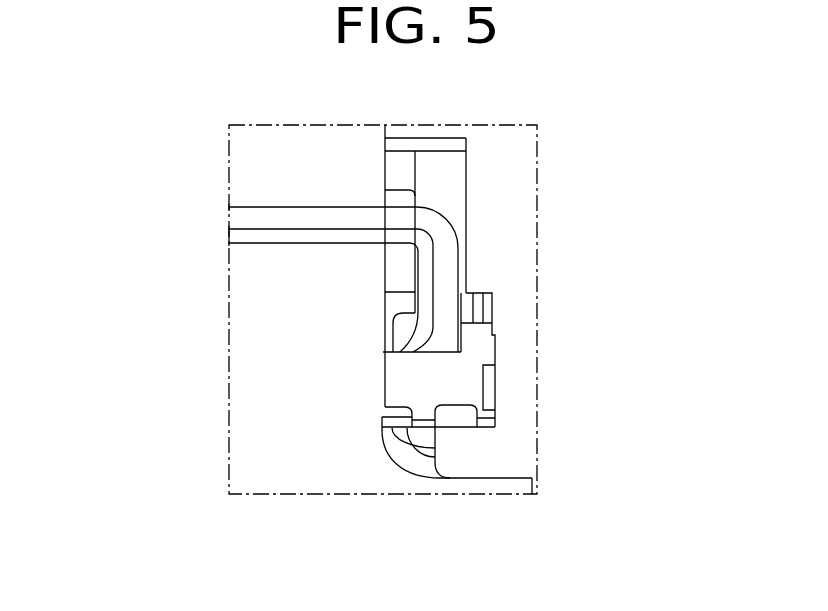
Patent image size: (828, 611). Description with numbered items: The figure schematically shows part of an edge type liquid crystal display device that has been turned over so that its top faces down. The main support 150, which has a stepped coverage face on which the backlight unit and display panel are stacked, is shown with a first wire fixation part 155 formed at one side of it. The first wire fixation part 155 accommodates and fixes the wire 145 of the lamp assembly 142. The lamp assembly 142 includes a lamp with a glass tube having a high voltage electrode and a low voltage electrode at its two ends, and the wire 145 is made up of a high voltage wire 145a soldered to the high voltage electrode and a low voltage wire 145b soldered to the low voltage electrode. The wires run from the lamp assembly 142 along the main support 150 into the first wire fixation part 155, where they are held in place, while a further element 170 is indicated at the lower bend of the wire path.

The main support 150 is at (513, 199).
The wire 145 is at (268, 268).
The high voltage wire 145a is at (240, 210).
The low voltage wire 145b is at (240, 238).
The first wire fixation part 155 is at (400, 272).
The lamp assembly 142 is at (408, 385).
The cable bend guide 170 is at (403, 466).